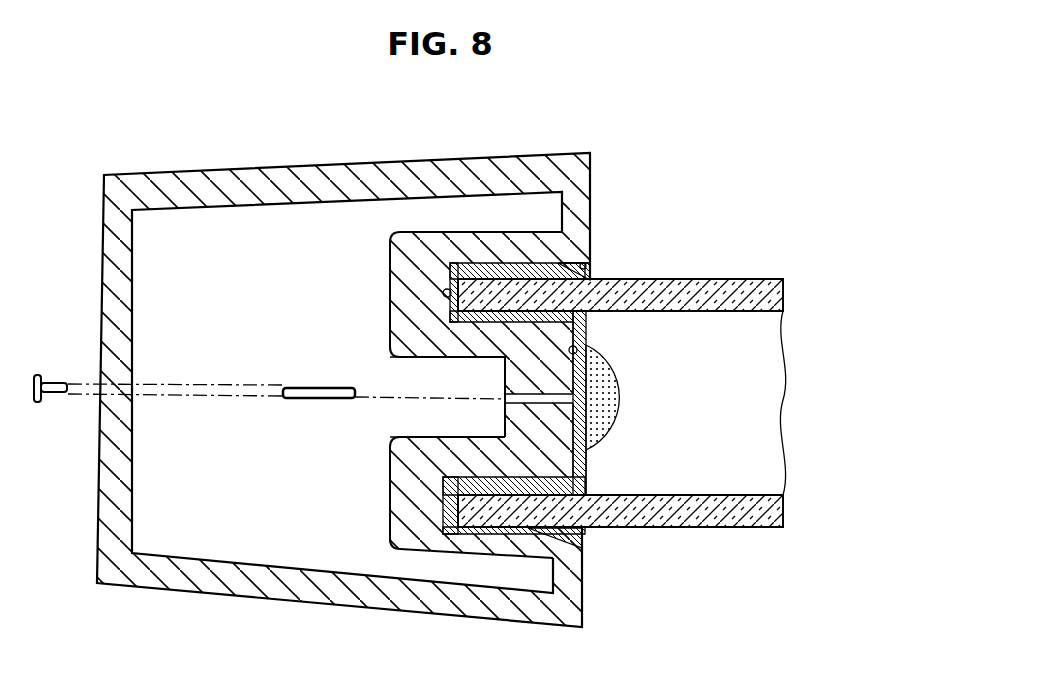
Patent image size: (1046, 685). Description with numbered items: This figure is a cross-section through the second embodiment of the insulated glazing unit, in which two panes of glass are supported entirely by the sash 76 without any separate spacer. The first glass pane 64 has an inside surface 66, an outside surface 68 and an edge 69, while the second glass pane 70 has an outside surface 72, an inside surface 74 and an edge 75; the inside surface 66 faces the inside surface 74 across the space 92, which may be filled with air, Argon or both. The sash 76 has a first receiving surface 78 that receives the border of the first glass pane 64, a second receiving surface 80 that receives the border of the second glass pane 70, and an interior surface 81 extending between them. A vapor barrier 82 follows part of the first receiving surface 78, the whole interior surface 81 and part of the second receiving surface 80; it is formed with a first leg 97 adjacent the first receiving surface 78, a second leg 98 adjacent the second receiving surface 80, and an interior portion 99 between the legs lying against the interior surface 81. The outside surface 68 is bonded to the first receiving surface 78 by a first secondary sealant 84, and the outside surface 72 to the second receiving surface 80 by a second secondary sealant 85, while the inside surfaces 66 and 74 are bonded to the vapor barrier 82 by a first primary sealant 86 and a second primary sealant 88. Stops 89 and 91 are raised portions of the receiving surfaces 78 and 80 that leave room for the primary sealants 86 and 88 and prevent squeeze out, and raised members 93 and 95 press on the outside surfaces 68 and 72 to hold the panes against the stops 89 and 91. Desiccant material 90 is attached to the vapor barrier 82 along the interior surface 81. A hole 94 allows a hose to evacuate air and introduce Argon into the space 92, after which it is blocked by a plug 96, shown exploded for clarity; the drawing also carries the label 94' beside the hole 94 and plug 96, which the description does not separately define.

The first glass pane 64 is at (712, 496).
The inside surface 66 is at (665, 496).
The outside surface 68 is at (690, 530).
The edge 69 is at (447, 500).
The second glass pane 70 is at (742, 295).
The outside surface 72 is at (690, 283).
The inside surface 74 is at (704, 314).
The edge 75 is at (447, 281).
The sash 76 is at (268, 597).
The first receiving surface 78 is at (582, 585).
The second receiving surface 80 is at (442, 294).
The interior surface 81 is at (578, 351).
The vapor barrier 82 is at (586, 456).
The first secondary sealant 84 is at (576, 535).
The second secondary sealant 85 is at (592, 278).
The first primary sealant 86 is at (498, 483).
The second primary sealant 88 is at (462, 322).
The stop 89 is at (586, 475).
The desiccant material 90 is at (612, 413).
The stop 91 is at (586, 327).
The space 92 is at (742, 416).
The raised member 93 is at (582, 562).
The hole 94 is at (512, 380).
The pin axis 94' is at (286, 367).
The raised member 95 is at (592, 262).
The plug 96 is at (44, 377).
The first leg 97 is at (487, 482).
The second leg 98 is at (490, 300).
The interior portion 99 is at (573, 441).